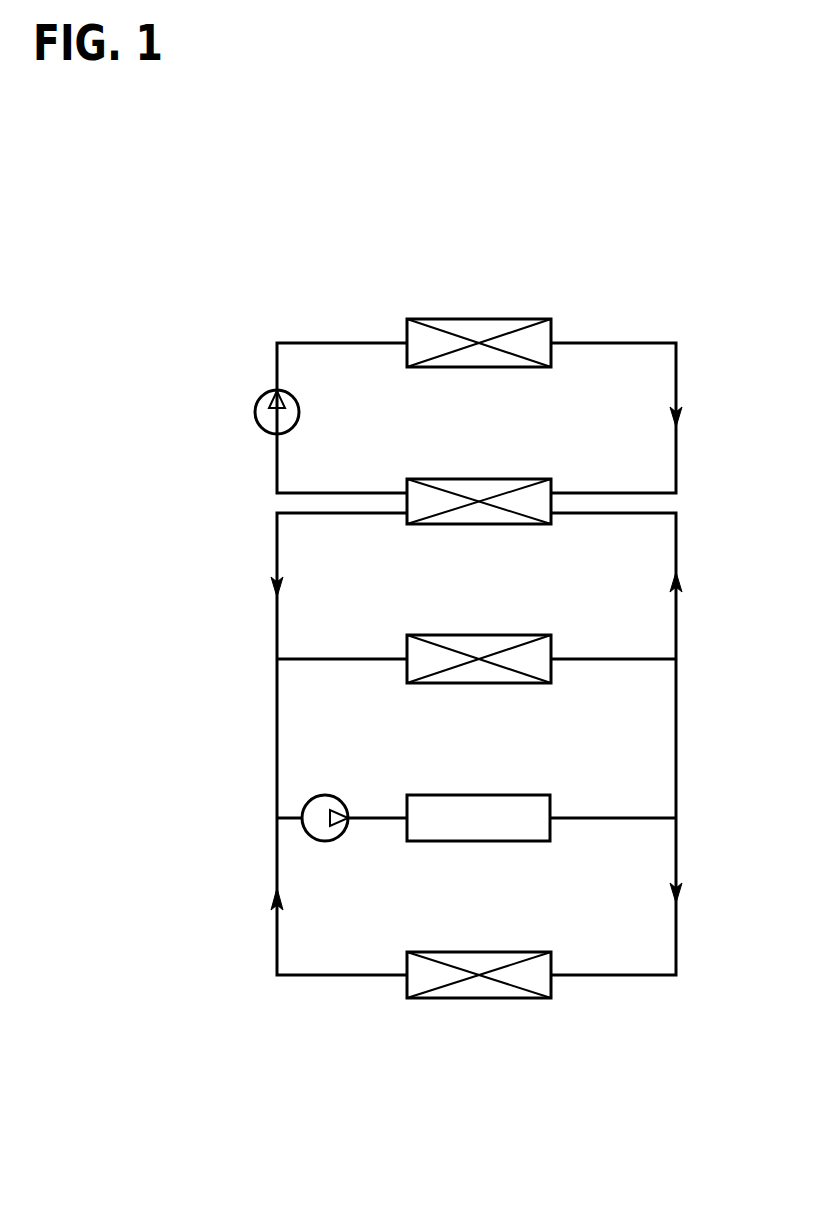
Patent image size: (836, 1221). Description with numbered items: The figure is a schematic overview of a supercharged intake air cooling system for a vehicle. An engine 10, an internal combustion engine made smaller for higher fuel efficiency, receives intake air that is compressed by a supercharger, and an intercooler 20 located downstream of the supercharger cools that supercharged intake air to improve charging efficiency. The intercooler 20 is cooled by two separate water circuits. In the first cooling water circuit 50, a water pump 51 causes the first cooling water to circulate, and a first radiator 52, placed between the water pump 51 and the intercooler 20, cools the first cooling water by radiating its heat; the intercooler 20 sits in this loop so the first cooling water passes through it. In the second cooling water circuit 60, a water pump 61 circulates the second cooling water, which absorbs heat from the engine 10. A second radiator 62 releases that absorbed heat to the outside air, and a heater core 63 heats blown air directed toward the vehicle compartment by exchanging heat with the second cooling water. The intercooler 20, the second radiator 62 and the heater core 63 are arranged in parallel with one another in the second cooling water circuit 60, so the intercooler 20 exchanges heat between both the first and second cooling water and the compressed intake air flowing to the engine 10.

The engine 10 is at (528, 841).
The intercooler 20 is at (525, 524).
The first cooling water circuit 50 is at (335, 343).
The water pump 51 is at (256, 412).
The first radiator 52 is at (490, 319).
The second cooling water circuit 60 is at (677, 733).
The water pump 61 is at (325, 841).
The second radiator 62 is at (505, 998).
The heater core 63 is at (535, 683).